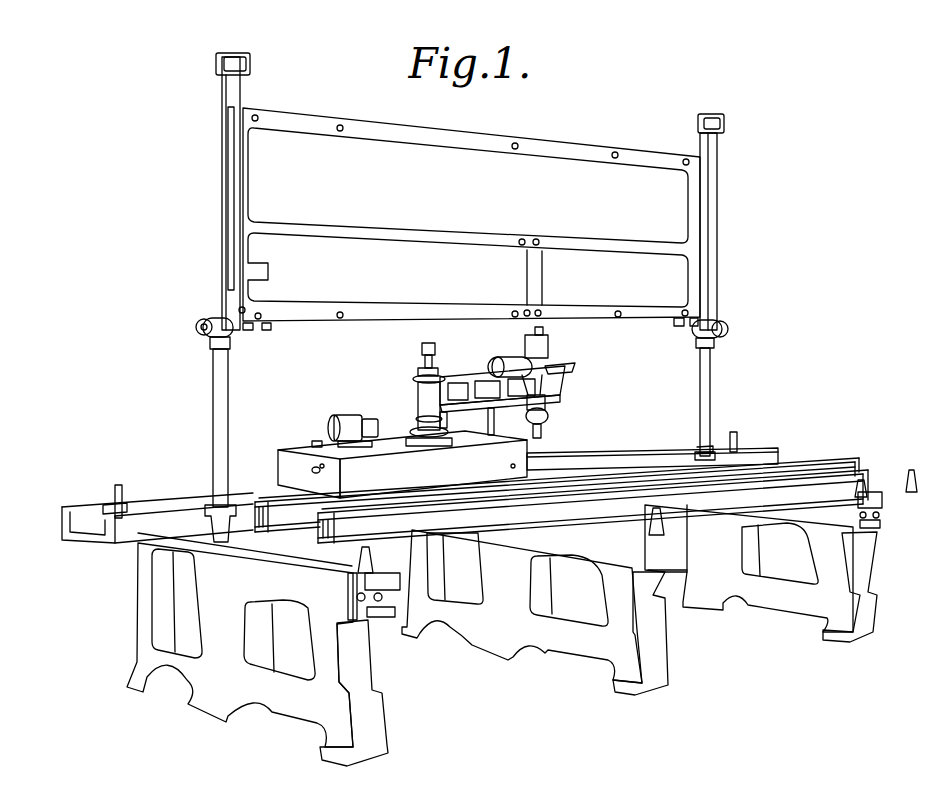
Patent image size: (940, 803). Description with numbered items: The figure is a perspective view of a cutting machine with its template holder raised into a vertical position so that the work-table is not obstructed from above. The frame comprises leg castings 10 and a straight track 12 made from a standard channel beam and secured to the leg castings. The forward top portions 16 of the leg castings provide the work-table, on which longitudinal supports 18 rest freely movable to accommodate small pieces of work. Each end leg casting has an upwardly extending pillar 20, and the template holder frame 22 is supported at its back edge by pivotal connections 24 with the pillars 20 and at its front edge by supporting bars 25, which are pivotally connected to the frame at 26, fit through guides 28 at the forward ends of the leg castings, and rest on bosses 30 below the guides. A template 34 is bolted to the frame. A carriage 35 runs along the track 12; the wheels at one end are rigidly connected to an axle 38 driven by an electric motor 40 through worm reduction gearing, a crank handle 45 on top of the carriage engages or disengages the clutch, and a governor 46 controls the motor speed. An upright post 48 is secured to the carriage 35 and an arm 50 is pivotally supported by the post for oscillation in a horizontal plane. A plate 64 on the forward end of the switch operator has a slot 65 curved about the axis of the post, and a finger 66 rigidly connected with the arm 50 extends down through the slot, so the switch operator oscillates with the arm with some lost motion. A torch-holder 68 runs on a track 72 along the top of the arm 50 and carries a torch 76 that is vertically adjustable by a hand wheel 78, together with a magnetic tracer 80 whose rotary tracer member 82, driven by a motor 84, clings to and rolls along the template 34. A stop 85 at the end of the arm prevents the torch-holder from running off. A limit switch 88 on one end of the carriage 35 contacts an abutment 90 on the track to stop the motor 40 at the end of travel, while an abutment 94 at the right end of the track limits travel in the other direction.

The leg castings 10 is at (138, 615).
The track 12 is at (132, 542).
The forward top portions 16 is at (372, 556).
The longitudinal supports 18 is at (276, 497).
The pillar 20 is at (213, 428).
The frame 22 is at (222, 174).
The pivotal connections 24 is at (197, 331).
The supporting bars 25 is at (717, 232).
The pivotal connection of supporting bars 26 is at (228, 53).
The guides 28 is at (398, 590).
The bosses 30 is at (382, 617).
The template 34 is at (294, 310).
The carriage 35 is at (386, 464).
The axle 38 is at (366, 478).
The electric motor 40 is at (340, 420).
The crank handle 45 is at (314, 441).
The governor 46 is at (368, 418).
The upright post 48 is at (420, 355).
The arm 50 is at (490, 409).
The plate 64 is at (432, 442).
The slot 65 is at (420, 410).
The finger 66 is at (447, 425).
The torch-holder 68 is at (548, 385).
The track 72 is at (472, 375).
The torch 76 is at (541, 432).
The hand wheel 78 is at (549, 418).
The magnetic tracer 80 is at (550, 346).
The rotary tracer member 82 is at (535, 332).
The motor 84 is at (508, 362).
The stop 85 is at (568, 372).
The limit switch 88 is at (312, 470).
The abutment 90 is at (124, 486).
The abutment 94 is at (736, 436).